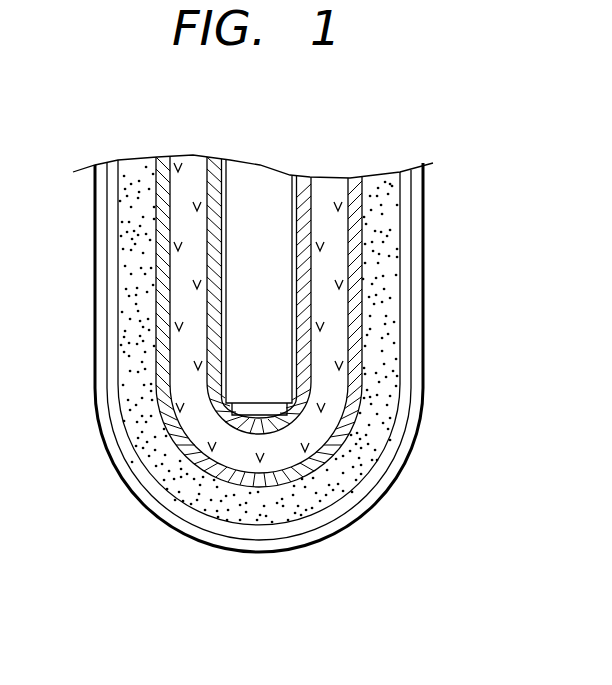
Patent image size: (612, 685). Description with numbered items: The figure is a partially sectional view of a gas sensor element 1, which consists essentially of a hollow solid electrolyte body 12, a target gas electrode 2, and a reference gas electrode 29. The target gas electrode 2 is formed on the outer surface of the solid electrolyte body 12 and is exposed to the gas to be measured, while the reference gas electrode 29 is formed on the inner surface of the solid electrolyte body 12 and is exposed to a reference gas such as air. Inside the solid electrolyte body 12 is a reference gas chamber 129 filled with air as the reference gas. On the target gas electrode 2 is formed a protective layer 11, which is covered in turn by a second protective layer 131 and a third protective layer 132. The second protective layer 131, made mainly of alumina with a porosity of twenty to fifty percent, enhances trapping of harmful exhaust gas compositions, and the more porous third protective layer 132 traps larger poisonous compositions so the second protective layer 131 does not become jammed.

The gas sensor element 1 is at (97, 493).
The target gas electrode 2 is at (357, 217).
The protective layer 11 is at (350, 477).
The solid electrolyte body 12 is at (340, 387).
The reference gas electrode 29 is at (305, 177).
The reference gas chamber 129 is at (253, 418).
The second protective layer 131 is at (402, 347).
The third protective layer 132 is at (417, 270).